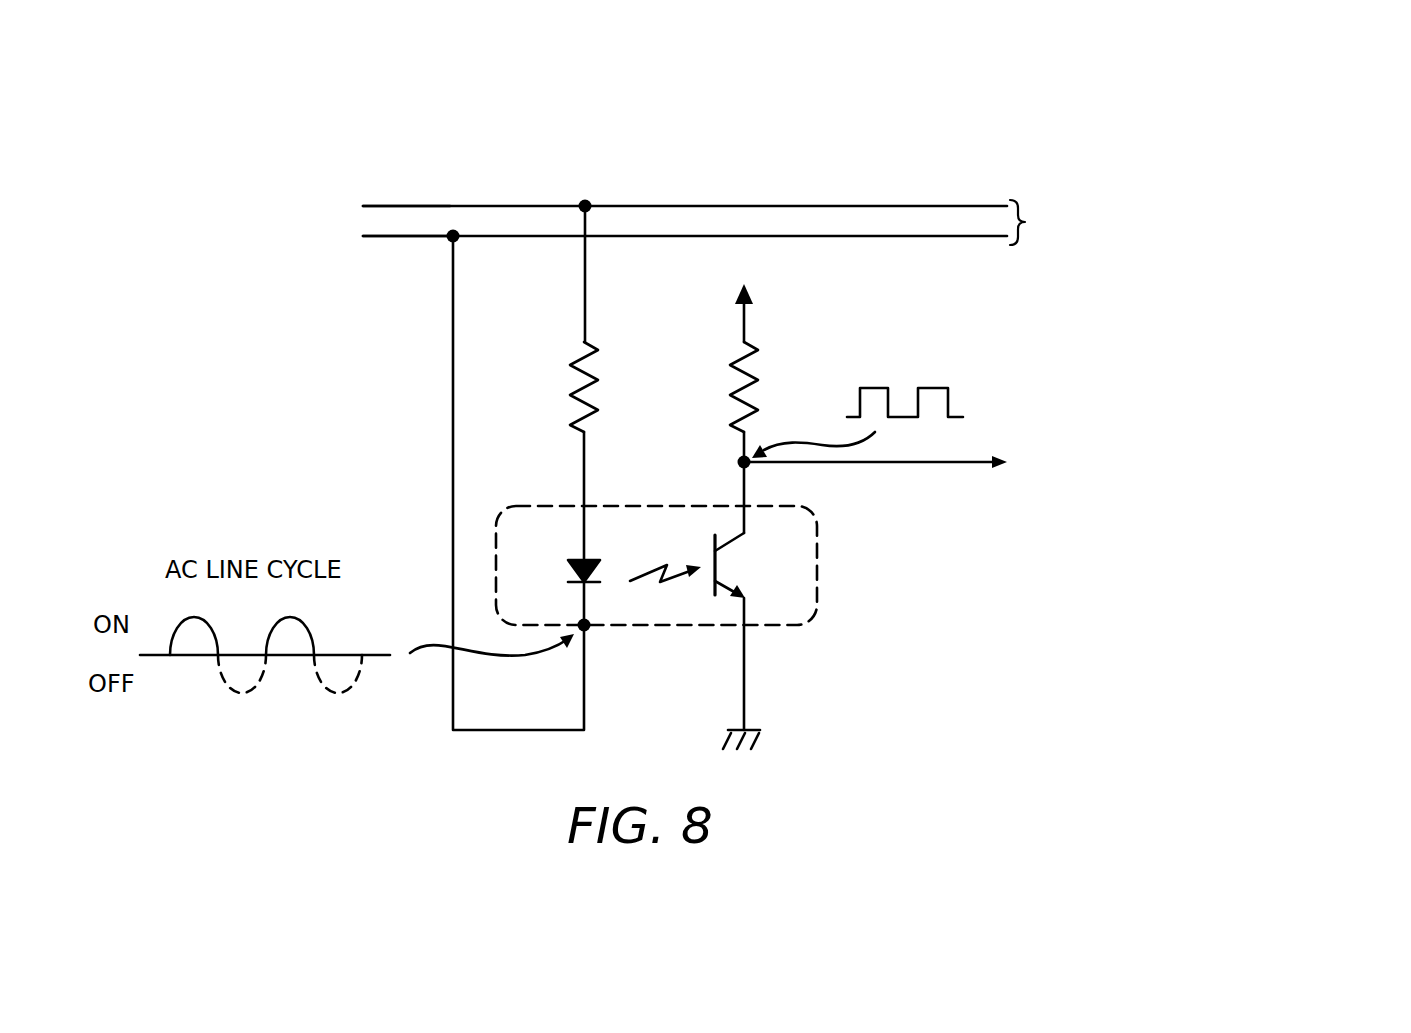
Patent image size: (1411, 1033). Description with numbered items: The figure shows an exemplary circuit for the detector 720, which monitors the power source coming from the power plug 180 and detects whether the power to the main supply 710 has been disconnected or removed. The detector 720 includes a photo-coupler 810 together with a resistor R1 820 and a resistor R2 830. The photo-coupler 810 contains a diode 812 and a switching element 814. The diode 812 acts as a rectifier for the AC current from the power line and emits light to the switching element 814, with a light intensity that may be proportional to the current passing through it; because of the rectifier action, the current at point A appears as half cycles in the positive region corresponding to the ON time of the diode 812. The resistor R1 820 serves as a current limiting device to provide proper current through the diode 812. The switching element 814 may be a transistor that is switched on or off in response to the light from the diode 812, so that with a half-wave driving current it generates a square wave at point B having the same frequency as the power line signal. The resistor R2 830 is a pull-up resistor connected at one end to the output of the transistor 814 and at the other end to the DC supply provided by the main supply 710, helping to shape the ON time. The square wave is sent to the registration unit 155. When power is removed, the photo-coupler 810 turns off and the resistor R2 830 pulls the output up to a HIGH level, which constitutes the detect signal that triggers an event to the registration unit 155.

The detector 720 is at (1266, 110).
The power plug 180 is at (318, 218).
The main supply 710 is at (1103, 225).
The resistor R1 820 is at (613, 451).
The resistor R2 830 is at (771, 408).
The device registration unit 155 is at (972, 459).
The diode 812 is at (608, 585).
The switching element 814 is at (754, 565).
The photo-coupler 810 is at (818, 603).